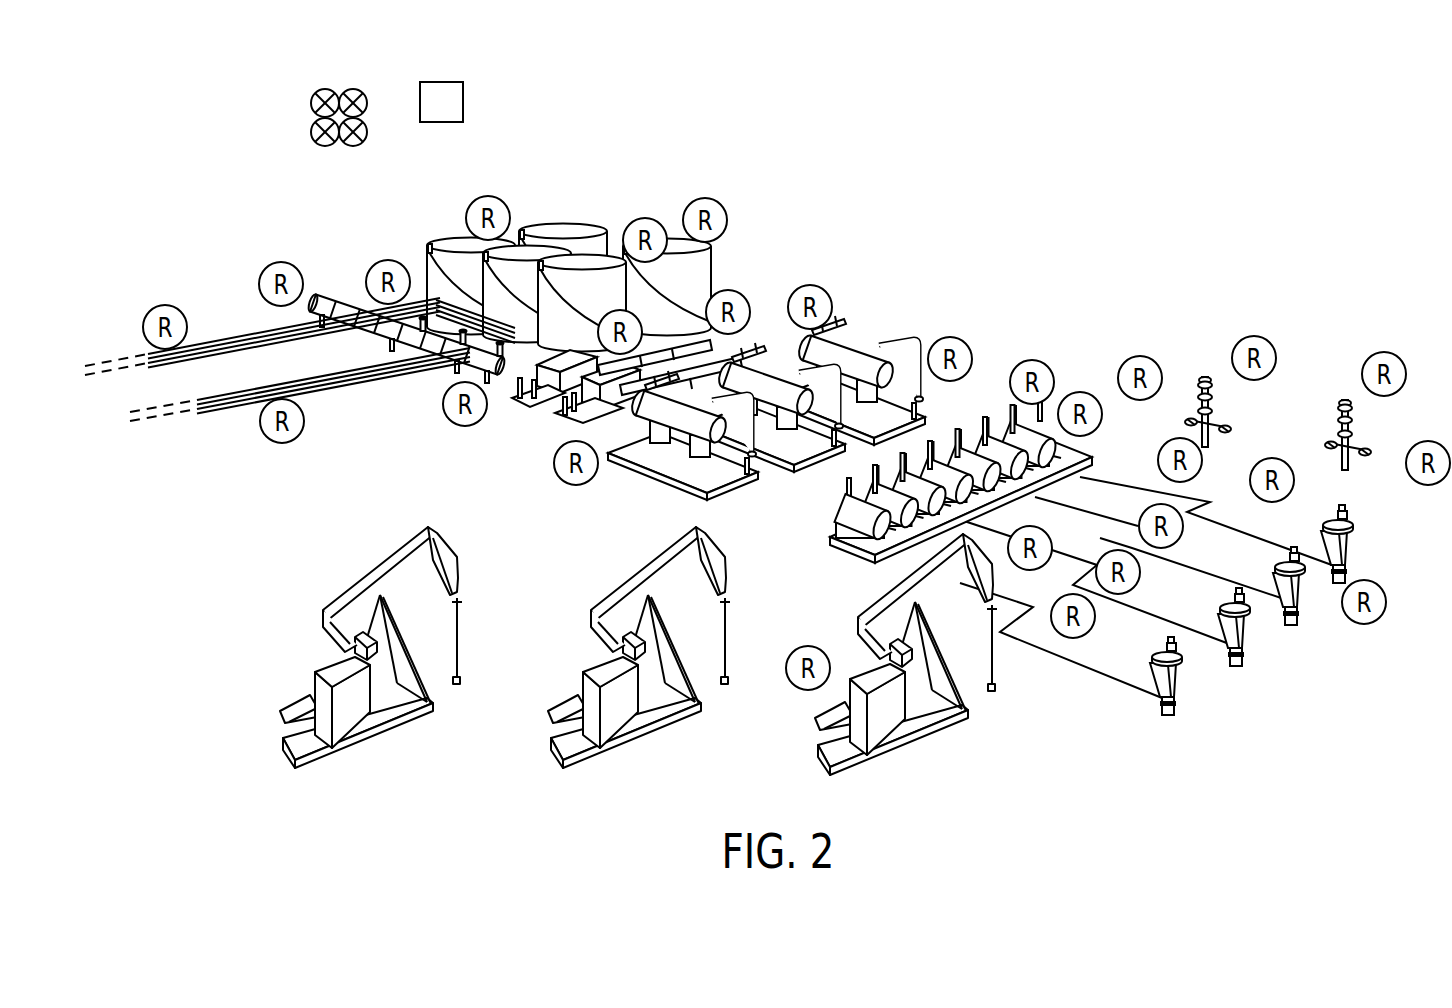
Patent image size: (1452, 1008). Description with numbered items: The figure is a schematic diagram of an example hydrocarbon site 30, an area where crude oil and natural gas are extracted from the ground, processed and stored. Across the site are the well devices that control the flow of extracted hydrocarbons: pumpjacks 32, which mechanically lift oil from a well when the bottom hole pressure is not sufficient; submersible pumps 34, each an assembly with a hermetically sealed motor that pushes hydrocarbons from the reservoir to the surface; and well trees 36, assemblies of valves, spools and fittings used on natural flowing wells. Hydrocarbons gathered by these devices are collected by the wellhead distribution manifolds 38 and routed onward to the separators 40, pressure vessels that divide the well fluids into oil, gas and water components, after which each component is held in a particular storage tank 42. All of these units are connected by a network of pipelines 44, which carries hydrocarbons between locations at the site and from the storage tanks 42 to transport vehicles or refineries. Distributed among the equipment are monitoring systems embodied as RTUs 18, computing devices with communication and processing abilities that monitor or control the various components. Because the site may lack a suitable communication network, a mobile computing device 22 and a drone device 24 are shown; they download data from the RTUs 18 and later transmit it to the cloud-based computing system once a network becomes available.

The RTU 18 is at (170, 305).
The mobile computing device 22 is at (463, 101).
The drone device 24 is at (302, 85).
The hydrocarbon site 30 is at (170, 183).
The pumpjack 32 is at (378, 577).
The submersible pump 34 is at (1348, 553).
The well tree 36 is at (1197, 387).
The wellhead distribution manifold 38 is at (848, 556).
The separator 40 is at (852, 345).
The storage tank 42 is at (568, 224).
The pipeline 44 is at (248, 336).